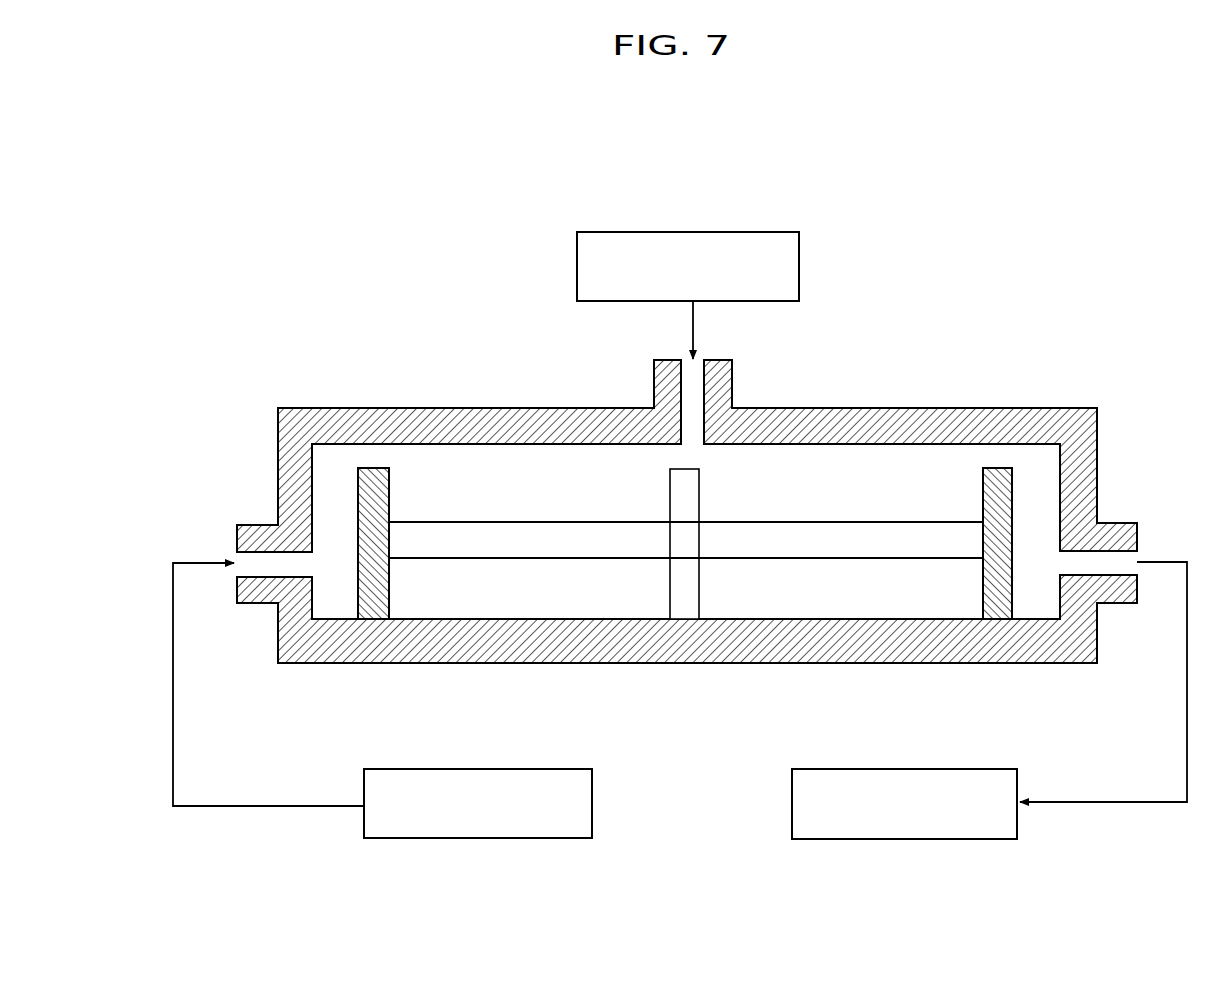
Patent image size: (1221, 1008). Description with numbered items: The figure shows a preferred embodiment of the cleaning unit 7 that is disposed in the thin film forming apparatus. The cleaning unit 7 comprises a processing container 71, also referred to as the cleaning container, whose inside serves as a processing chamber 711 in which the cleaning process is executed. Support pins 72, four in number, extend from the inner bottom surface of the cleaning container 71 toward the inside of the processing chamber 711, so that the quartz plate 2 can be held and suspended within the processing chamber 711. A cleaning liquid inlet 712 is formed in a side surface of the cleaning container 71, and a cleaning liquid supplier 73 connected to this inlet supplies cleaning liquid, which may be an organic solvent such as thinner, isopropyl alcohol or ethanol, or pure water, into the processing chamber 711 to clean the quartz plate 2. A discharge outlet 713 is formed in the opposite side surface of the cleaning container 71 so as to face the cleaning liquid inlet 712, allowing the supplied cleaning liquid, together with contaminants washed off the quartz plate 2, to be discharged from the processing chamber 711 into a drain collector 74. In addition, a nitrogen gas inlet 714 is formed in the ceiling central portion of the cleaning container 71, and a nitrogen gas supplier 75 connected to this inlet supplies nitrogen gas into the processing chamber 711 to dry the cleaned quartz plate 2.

The cleaning unit 7 is at (1068, 275).
The processing container 71 is at (343, 426).
The processing chamber 711 is at (902, 463).
The cleaning liquid inlet 712 is at (268, 586).
The discharge outlet 713 is at (1120, 582).
The nitrogen gas inlet 714 is at (682, 388).
The support pin 72 is at (680, 485).
The quartz plate 2 is at (750, 537).
The cleaning liquid supplier 73 is at (505, 768).
The drain collector 74 is at (826, 769).
The nitrogen gas supplier 75 is at (707, 232).